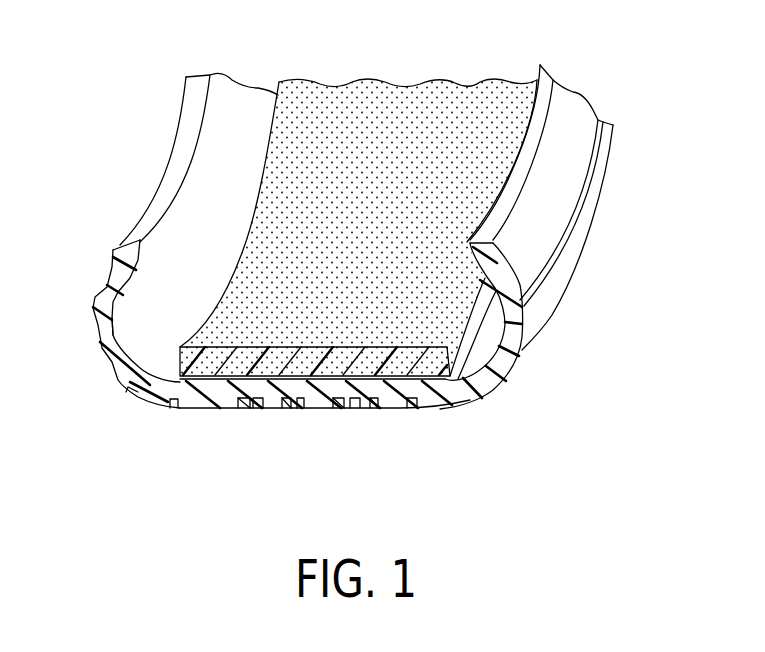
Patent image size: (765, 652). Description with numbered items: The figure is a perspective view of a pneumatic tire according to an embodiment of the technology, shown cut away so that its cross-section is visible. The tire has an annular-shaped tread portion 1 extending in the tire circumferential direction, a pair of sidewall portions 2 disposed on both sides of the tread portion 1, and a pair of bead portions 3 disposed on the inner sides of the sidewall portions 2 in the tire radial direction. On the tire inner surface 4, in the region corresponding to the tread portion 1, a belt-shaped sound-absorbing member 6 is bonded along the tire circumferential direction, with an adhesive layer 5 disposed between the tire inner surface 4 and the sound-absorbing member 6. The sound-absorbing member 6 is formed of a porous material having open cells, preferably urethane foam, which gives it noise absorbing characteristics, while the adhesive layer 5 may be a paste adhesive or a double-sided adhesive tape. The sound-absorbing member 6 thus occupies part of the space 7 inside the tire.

The tread portion 1 is at (435, 410).
The sidewall portions 2 is at (102, 343).
The bead portions 3 is at (110, 265).
The tire inner surface 4 is at (113, 325).
The adhesive layer 5 is at (323, 405).
The sound-absorbing member 6 is at (395, 115).
The space 7 is at (198, 228).